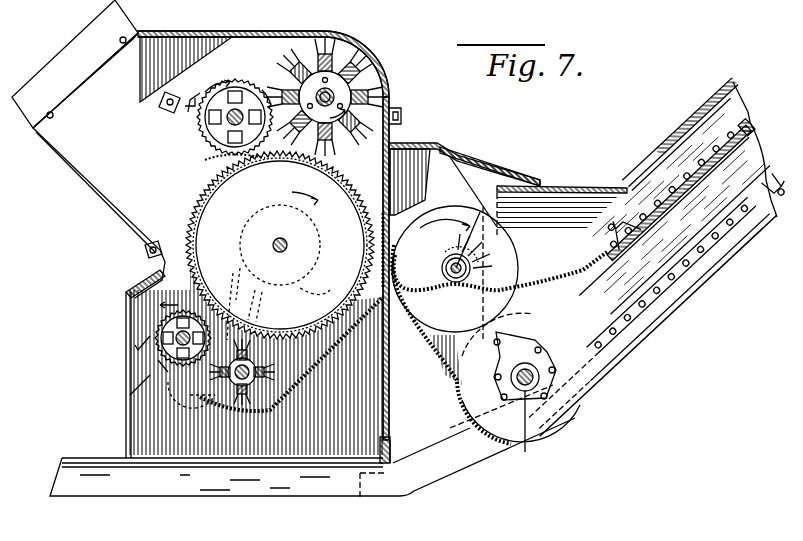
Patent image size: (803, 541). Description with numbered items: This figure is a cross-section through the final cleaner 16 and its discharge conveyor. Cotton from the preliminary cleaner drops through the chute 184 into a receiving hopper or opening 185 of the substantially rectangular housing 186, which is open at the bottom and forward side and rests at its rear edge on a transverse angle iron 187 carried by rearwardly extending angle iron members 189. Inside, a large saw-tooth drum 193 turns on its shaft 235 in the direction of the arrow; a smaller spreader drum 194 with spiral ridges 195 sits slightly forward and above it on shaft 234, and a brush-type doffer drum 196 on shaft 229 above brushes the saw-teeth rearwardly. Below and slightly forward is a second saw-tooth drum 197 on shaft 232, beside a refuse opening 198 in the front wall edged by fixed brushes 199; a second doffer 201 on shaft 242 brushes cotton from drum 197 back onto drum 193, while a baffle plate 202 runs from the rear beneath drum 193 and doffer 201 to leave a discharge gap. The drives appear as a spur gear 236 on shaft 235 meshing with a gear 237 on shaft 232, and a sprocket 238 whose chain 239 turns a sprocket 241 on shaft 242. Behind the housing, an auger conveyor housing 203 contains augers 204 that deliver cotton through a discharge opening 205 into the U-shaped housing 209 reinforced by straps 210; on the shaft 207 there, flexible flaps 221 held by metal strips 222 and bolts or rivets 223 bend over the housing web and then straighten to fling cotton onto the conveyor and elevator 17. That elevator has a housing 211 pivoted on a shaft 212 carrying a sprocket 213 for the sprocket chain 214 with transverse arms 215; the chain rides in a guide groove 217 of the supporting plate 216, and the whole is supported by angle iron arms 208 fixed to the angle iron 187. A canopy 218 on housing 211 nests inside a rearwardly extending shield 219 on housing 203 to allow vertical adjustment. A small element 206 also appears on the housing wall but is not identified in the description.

The final cleaner 16 is at (392, 143).
The discharge elevator conveyor 17 is at (742, 72).
The chute 184 is at (63, 39).
The receiving hopper 185 is at (70, 133).
The housing 186 is at (210, 31).
The angle iron 187 is at (392, 458).
The angle iron members 189 is at (330, 498).
The drum 193 is at (200, 193).
The smaller drum 194 is at (202, 120).
The spiral ridges 195 is at (236, 80).
The doffer drum 196 is at (338, 68).
The second sawtooth surfaced drum 197 is at (185, 368).
The refuse opening 198 is at (124, 322).
The fixed brushes 199 is at (124, 292).
The second doffer 201 is at (259, 375).
The baffle plate 202 is at (270, 418).
The auger conveyor housing 203 is at (440, 147).
The auger 204 is at (447, 216).
The discharge opening 205 is at (382, 159).
The bracket 206 is at (392, 100).
The shaft 207 is at (456, 248).
The angle iron arms 208 is at (468, 470).
The U-shaped housing 209 is at (456, 385).
The straps 210 is at (573, 339).
The housing 211 is at (714, 270).
The shaft 212 is at (521, 393).
The sprocket 213 is at (547, 387).
The sprocket chain 214 is at (617, 240).
The transverse arms 215 is at (640, 180).
The supporting plate 216 is at (702, 188).
The guide groove 217 is at (748, 118).
The enclosing canopy 218 is at (585, 180).
The shield 219 is at (499, 184).
The flexible flap members 221 is at (533, 250).
The metal strips 222 is at (462, 283).
The bolts or rivets 223 is at (455, 250).
The shaft 229 is at (332, 96).
The shaft 232 is at (160, 368).
The shaft 234 is at (222, 157).
The shaft 235 is at (280, 245).
The spur gear 236 is at (322, 288).
The gear 237 is at (148, 282).
The sprocket 238 is at (264, 306).
The chain 239 is at (250, 270).
The sprocket 241 is at (222, 415).
The shaft 242 is at (233, 388).